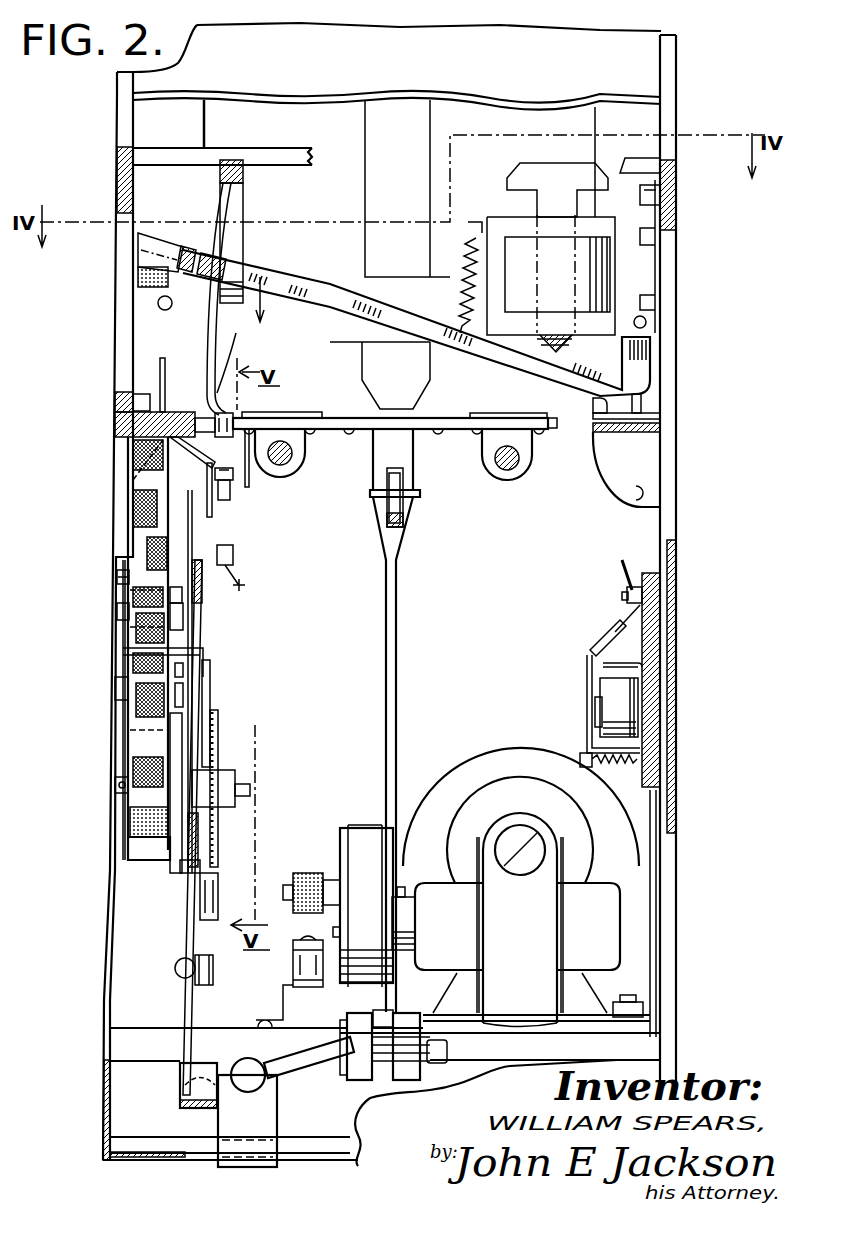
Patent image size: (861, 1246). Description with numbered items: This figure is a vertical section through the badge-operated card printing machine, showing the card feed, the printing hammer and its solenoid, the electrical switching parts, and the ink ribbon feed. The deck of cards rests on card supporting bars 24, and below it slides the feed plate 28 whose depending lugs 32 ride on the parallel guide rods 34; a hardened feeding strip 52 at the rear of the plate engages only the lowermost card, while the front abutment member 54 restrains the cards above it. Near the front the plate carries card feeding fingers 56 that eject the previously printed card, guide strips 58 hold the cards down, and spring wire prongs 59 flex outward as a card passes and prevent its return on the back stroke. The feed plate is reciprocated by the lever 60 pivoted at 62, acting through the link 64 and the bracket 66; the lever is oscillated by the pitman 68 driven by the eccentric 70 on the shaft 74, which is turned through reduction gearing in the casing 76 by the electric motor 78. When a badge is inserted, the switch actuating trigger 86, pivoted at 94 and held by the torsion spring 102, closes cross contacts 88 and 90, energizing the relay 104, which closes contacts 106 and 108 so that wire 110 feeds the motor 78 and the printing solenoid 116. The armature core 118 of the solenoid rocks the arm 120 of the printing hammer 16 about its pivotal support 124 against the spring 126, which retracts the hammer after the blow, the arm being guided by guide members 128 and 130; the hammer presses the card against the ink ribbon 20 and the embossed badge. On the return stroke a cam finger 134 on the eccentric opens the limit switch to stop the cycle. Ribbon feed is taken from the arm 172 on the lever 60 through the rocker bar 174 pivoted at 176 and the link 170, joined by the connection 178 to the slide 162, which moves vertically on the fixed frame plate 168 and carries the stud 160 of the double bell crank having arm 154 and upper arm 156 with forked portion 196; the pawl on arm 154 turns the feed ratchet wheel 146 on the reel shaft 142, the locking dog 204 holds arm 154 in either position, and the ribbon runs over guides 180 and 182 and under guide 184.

The printing hammer 16 is at (148, 256).
The ink ribbon 20 is at (142, 543).
The card supporting bars 24 is at (632, 440).
The feed plate 28 is at (336, 417).
The depending lugs 32 is at (290, 470).
The guide rods 34 is at (294, 456).
The feeding strip 52 is at (283, 411).
The front abutment member 54 is at (400, 395).
The card feeding fingers 56 is at (240, 420).
The guide strips 58 is at (140, 394).
The spring wire prongs 59 is at (160, 372).
The lever 60 is at (398, 648).
The pivot 62 is at (385, 1026).
The link 64 is at (405, 520).
The bracket 66 is at (380, 498).
The pitman 68 is at (368, 826).
The eccentric 70 is at (342, 830).
The shaft 74 is at (414, 915).
The casing 76 is at (538, 920).
The electric motor 78 is at (485, 748).
The switch actuating trigger 86 is at (247, 460).
The cross contact 88 is at (213, 473).
The cross contact 90 is at (212, 457).
The pivot 94 is at (235, 351).
The torsion spring 102 is at (166, 315).
The relay 104 is at (603, 705).
The relay contact 106 is at (596, 654).
The relay contact 108 is at (627, 620).
The wire 110 is at (257, 568).
The printing solenoid 116 is at (590, 271).
The armature core 118 is at (545, 190).
The arm 120 is at (270, 277).
The pivotal support 124 is at (648, 328).
The spring 126 is at (468, 232).
The guide member 128 is at (215, 213).
The guide member 130 is at (237, 238).
The cam finger 134 is at (313, 858).
The reel shaft 142 is at (116, 786).
The feed ratchet wheel 146 is at (220, 725).
The arm 154 is at (205, 672).
The upper arm 156 is at (205, 648).
The stud 160 is at (215, 700).
The slide 162 is at (202, 623).
The fixed frame plate 168 is at (188, 518).
The link 170 is at (186, 1016).
The arm 172 is at (345, 1028).
The rocker bar 174 is at (296, 1070).
The pivot 176 is at (248, 1066).
The connection 178 is at (176, 968).
The ribbon guide 180 is at (115, 688).
The ribbon guide 182 is at (117, 612).
The ribbon guide 184 is at (117, 576).
The forked portion 196 is at (124, 651).
The locking dog 204 is at (198, 918).